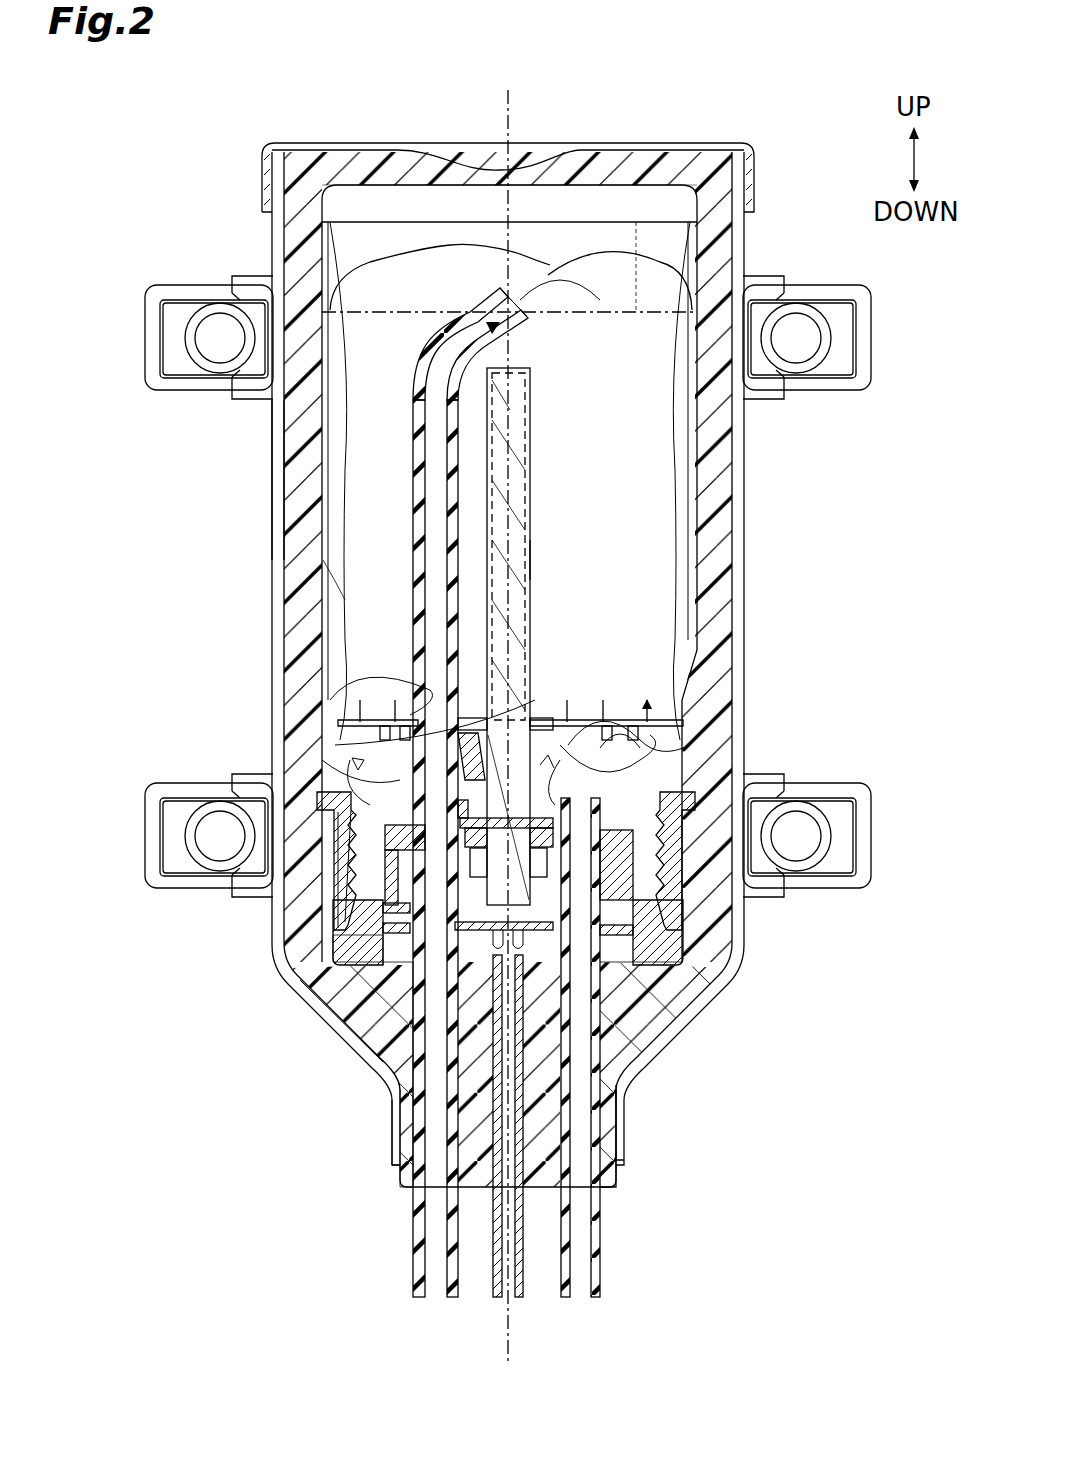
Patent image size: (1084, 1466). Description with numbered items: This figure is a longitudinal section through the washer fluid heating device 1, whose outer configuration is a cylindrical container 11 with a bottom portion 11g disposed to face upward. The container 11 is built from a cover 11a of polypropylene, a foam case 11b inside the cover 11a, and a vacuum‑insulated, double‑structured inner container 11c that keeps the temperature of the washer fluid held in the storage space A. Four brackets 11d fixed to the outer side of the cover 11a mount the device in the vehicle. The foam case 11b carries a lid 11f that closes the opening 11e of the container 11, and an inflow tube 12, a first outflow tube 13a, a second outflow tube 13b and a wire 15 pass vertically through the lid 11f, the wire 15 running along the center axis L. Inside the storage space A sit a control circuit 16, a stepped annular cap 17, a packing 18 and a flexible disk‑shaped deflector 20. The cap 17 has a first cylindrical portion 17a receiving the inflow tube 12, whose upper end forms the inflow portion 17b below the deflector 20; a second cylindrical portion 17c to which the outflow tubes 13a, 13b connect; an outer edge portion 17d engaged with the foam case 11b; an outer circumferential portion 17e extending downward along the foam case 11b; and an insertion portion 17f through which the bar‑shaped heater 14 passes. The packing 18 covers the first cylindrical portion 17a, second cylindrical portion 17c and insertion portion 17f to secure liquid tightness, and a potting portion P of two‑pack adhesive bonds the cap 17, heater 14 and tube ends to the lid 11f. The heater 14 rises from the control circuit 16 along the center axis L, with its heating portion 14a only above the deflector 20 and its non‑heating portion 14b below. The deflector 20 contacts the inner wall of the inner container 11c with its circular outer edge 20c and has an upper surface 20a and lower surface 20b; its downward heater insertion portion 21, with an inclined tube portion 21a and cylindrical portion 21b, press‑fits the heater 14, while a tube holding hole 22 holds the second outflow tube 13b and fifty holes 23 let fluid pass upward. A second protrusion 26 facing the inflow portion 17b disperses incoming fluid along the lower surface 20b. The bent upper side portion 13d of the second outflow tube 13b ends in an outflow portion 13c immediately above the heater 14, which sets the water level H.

The heating device 1 is at (712, 108).
The container 11 is at (479, 629).
The cover 11a is at (284, 487).
The foam case 11b is at (303, 519).
The inner container 11c is at (340, 542).
The bracket 11d is at (145, 340).
The opening 11e is at (626, 1167).
The lid 11f is at (624, 1128).
The bottom portion 11g is at (338, 170).
The inflow tube 12 is at (601, 1258).
The first outflow tube 13a is at (413, 1230).
The second outflow tube 13b is at (413, 432).
The outflow portion 13c is at (522, 322).
The upper side portion 13d is at (500, 292).
The heater 14 is at (530, 594).
The heating portion 14a is at (530, 556).
The non-heating portion 14b is at (540, 700).
The wire 15 is at (494, 1290).
The control circuit 16 is at (396, 1094).
The cap 17 is at (335, 962).
The first cylindrical portion 17a is at (670, 1040).
The inflow portion 17b is at (682, 896).
The second cylindrical portion 17c is at (358, 1040).
The outer edge portion 17d is at (334, 905).
The outer circumferential portion 17e is at (340, 928).
The insertion portion 17f is at (648, 1078).
The packing 18 is at (325, 1022).
The deflector 20 is at (603, 700).
The upper surface 20a is at (658, 718).
The lower surface 20b is at (642, 726).
The outer edge 20c is at (690, 702).
The heater insertion portion 21 is at (288, 814).
The inclined tube portion 21a is at (403, 735).
The cylindrical portion 21b is at (400, 790).
The tube holding hole 22 is at (460, 760).
The hole 23 is at (460, 818).
The second protrusion 26 is at (660, 746).
The storage space A is at (343, 590).
The water level H is at (636, 312).
The center axis L is at (512, 1360).
The potting portion P is at (700, 1000).